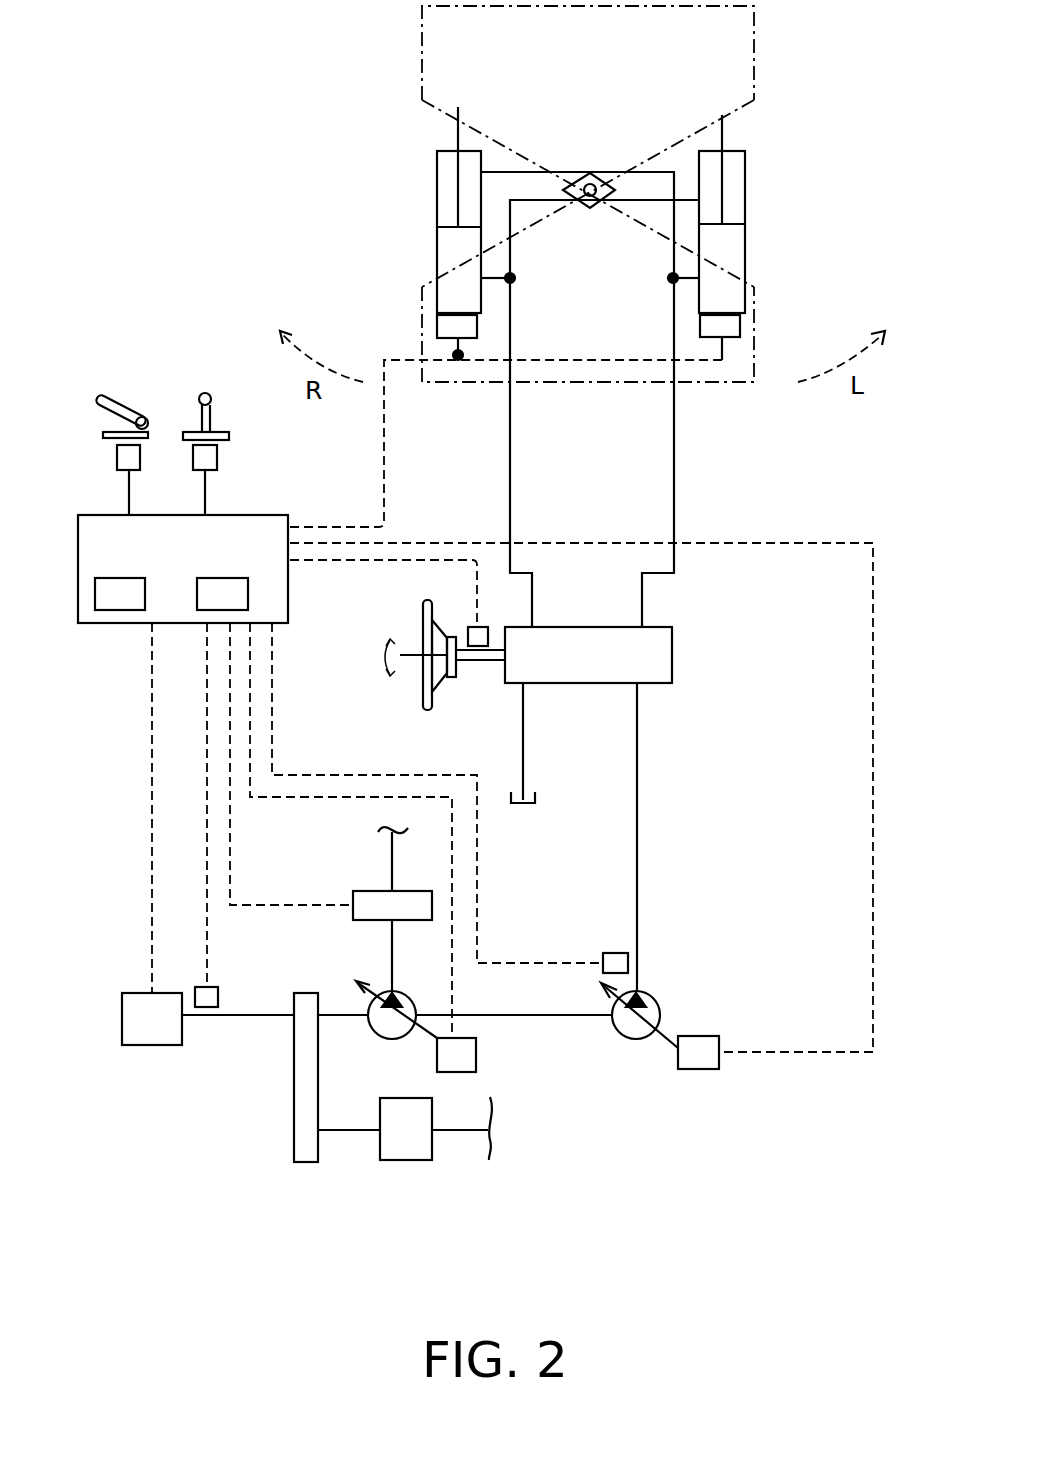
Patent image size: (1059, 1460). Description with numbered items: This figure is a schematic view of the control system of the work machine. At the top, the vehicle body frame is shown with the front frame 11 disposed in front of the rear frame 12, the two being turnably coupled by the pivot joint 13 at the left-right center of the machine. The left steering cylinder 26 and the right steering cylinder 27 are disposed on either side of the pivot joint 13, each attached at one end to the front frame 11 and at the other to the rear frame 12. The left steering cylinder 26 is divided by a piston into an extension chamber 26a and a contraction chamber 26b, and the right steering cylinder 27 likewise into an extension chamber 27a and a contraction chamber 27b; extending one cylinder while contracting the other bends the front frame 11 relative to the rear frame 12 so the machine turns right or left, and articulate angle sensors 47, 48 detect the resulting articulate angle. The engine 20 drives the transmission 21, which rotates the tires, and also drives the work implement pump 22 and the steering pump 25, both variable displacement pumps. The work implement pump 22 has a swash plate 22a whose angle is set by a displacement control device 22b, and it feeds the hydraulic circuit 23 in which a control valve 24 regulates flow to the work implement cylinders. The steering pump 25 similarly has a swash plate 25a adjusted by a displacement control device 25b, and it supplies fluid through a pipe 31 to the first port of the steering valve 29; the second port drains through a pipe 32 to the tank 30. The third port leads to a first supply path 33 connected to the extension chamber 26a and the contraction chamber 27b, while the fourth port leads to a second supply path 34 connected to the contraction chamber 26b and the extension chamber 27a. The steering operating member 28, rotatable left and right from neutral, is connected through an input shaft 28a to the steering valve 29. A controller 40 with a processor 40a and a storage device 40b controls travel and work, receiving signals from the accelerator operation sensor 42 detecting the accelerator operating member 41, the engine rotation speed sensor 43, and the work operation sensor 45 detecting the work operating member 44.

The front frame 11 is at (733, 382).
The rear frame 12 is at (754, 20).
The pivot joint 13 is at (608, 175).
The engine 20 is at (145, 1045).
The transmission 21 is at (405, 1153).
The work implement pump 22 is at (400, 993).
The swash plate 22a is at (392, 1027).
The displacement control device 22b is at (476, 1055).
The hydraulic circuit 23 is at (392, 862).
The control valve 24 is at (403, 890).
The steering pump 25 is at (653, 997).
The swash plate 25a is at (648, 1018).
The displacement control device 25b is at (700, 1069).
The left steering cylinder 26 is at (738, 250).
The extension chamber 26a is at (732, 285).
The contraction chamber 26b is at (730, 200).
The right steering cylinder 27 is at (437, 228).
The extension chamber 27a is at (437, 277).
The contraction chamber 27b is at (445, 172).
The steering operating member 28 is at (428, 678).
The input shaft 28a is at (472, 662).
The steering valve 29 is at (672, 652).
The tank 30 is at (537, 795).
The pipe 31 is at (637, 735).
The pipe 32 is at (527, 748).
The first supply path 33 is at (674, 467).
The second supply path 34 is at (510, 477).
The controller 40 is at (290, 602).
The processor 40a is at (107, 610).
The storage device 40b is at (248, 590).
The accelerator operating member 41 is at (130, 398).
The accelerator operation sensor 42 is at (117, 459).
The engine rotation speed sensor 43 is at (218, 998).
The work operating member 44 is at (208, 393).
The work operation sensor 45 is at (217, 458).
The articulate angle sensor 47 is at (742, 325).
The articulate angle sensor 48 is at (442, 320).